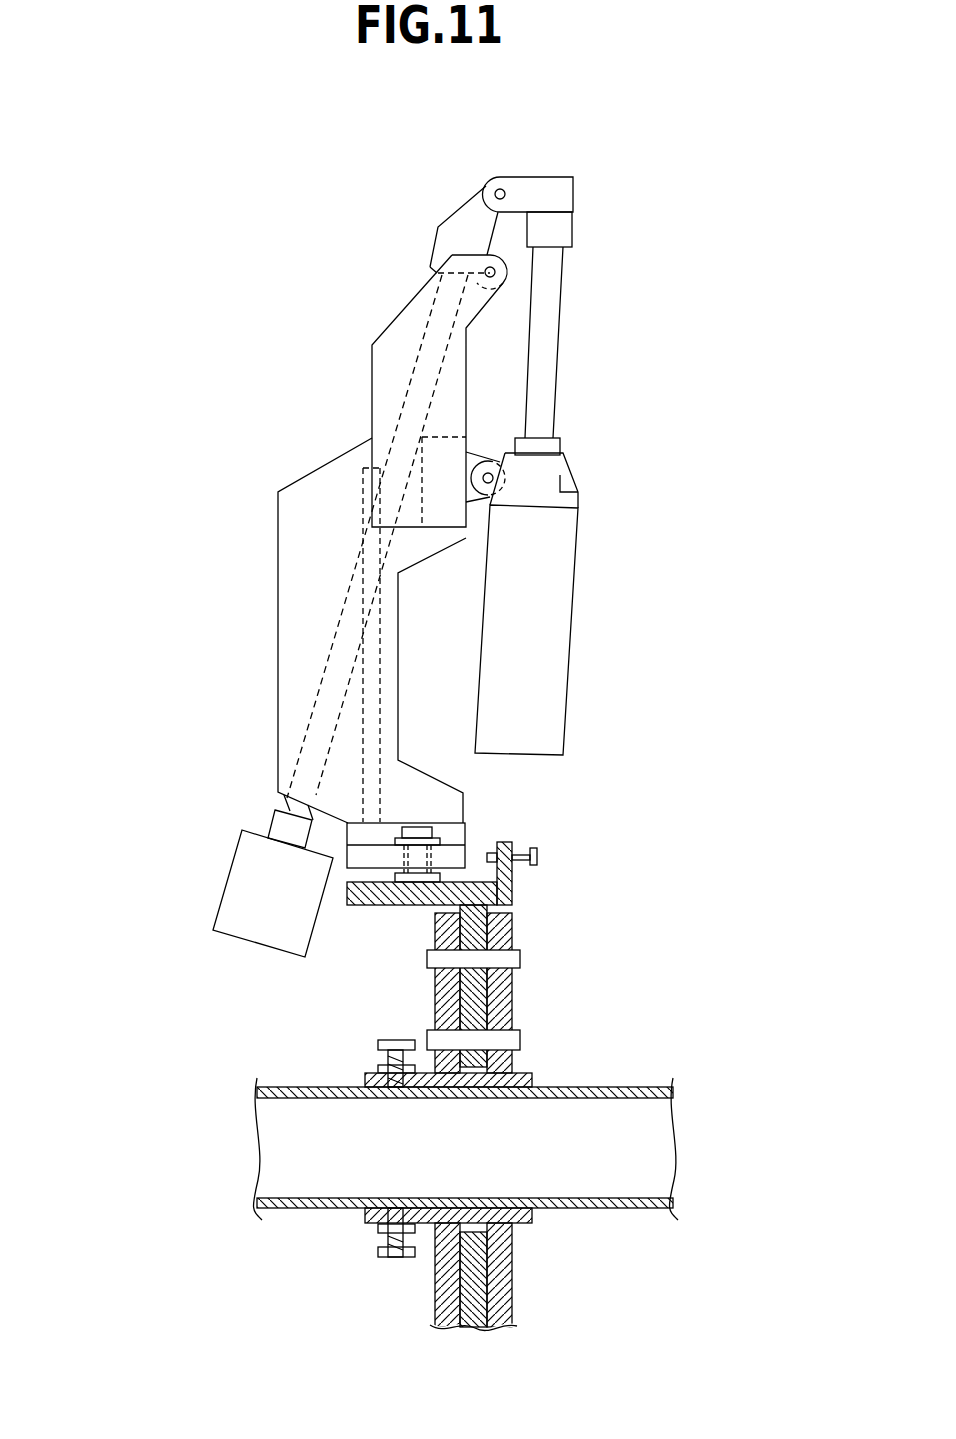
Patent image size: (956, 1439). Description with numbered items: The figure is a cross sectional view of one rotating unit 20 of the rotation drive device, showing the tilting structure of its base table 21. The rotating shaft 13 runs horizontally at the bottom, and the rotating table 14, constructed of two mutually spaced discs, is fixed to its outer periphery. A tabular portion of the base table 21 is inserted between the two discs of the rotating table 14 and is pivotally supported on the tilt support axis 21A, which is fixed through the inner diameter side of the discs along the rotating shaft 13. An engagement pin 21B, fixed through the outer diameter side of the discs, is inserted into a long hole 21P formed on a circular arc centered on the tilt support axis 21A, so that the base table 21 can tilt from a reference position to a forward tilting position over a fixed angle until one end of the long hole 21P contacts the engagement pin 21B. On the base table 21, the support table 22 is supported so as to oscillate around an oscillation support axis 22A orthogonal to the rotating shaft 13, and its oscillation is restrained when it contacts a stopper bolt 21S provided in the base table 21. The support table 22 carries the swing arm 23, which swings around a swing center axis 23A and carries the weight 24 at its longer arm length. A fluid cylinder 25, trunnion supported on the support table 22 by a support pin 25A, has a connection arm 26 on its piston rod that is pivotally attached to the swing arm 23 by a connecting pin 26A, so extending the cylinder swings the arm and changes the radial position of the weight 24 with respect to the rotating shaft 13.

The rotating shaft 13 is at (652, 1086).
The rotating table 14 is at (435, 1005).
The rotating unit 20 is at (366, 283).
The base table 21 is at (370, 903).
The tilt support axis 21A is at (513, 1040).
The engagement pin 21B is at (513, 955).
The long hole 21P is at (480, 953).
The stopper bolt 21S is at (537, 857).
The support table 22 is at (320, 480).
The oscillation support axis 22A is at (434, 832).
The swing arm 23 is at (458, 215).
The swing center axis 23A is at (505, 275).
The weight 24 is at (235, 882).
The fluid cylinder 25 is at (562, 593).
The support pin 25A is at (487, 497).
The connection arm 26 is at (575, 195).
The connecting pin 26A is at (500, 188).